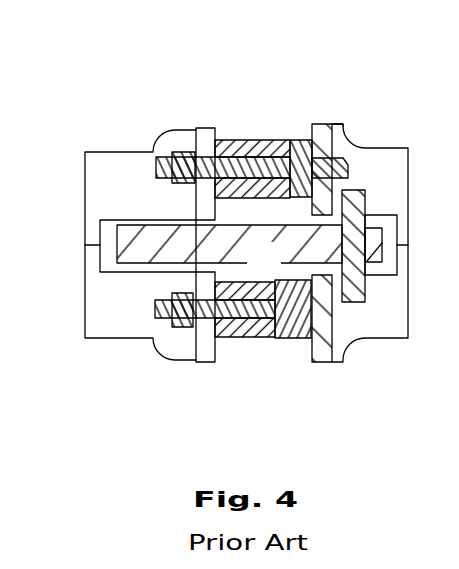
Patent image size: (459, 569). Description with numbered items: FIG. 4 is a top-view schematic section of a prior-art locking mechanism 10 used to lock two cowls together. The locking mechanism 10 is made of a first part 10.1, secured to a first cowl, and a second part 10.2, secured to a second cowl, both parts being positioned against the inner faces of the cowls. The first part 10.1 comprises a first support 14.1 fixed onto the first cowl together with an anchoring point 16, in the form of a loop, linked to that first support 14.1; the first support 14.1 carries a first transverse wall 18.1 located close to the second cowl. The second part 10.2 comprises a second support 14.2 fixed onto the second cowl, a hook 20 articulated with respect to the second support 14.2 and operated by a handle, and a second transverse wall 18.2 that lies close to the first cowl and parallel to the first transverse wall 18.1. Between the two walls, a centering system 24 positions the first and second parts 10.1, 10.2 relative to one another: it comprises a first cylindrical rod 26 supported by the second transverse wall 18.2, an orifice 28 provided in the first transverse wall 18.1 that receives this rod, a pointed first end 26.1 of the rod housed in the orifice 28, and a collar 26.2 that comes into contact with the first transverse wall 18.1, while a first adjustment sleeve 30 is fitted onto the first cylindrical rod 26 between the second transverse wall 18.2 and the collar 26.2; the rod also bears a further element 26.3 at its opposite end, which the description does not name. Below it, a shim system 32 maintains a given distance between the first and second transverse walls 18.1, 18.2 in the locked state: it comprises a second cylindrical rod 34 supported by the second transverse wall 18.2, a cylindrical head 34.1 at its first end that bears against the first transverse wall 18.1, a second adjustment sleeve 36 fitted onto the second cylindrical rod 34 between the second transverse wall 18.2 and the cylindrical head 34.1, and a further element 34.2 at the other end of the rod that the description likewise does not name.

The locking mechanism 10 is at (84, 92).
The first part 10.1 is at (368, 354).
The second part 10.2 is at (159, 354).
The first support 14.1 is at (369, 154).
The second support 14.2 is at (104, 328).
The anchoring point 16 is at (365, 302).
The first transverse wall 18.1 is at (320, 352).
The second transverse wall 18.2 is at (203, 355).
The hook 20 is at (370, 226).
The centering system 24 is at (278, 128).
The first cylindrical rod 26 is at (271, 141).
The pointed first end 26.1 is at (352, 162).
The collar 26.2 is at (300, 139).
The bolt head 26.3 is at (187, 152).
The orifice 28 is at (344, 122).
The first adjustment sleeve 30 is at (233, 140).
The shim system 32 is at (254, 341).
The second cylindrical rod 34 is at (223, 340).
The cylindrical head 34.1 is at (282, 340).
The second bolt head 34.2 is at (172, 294).
The second adjustment sleeve 36 is at (251, 283).